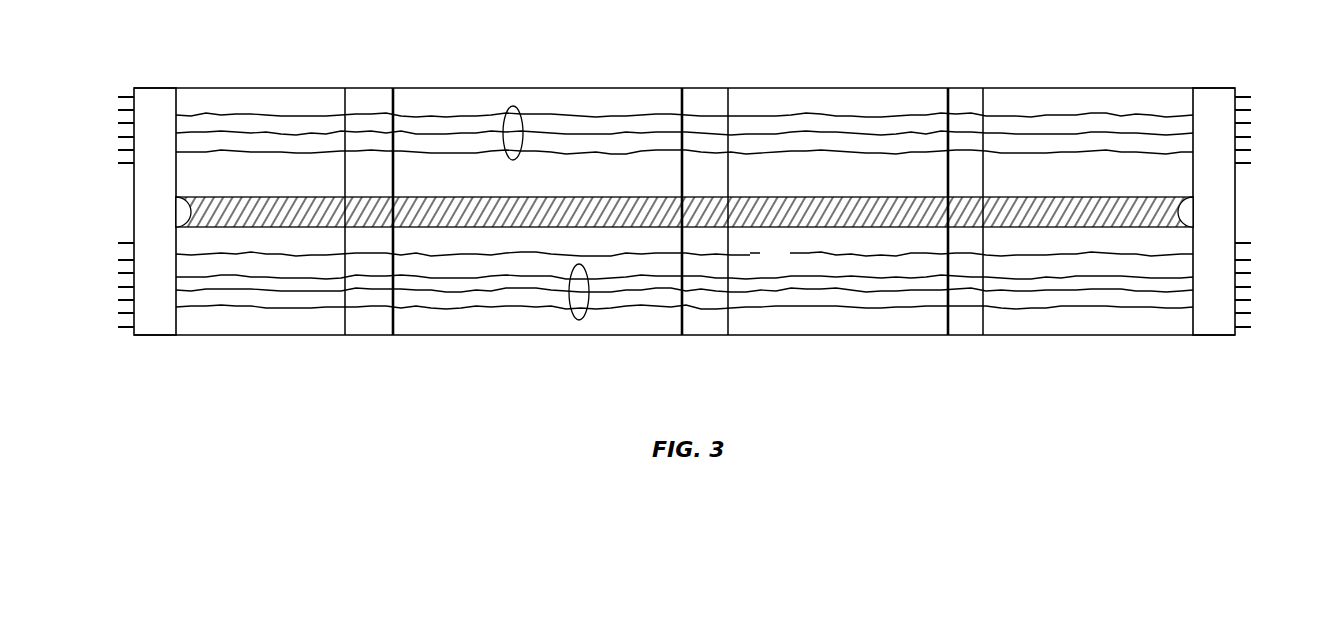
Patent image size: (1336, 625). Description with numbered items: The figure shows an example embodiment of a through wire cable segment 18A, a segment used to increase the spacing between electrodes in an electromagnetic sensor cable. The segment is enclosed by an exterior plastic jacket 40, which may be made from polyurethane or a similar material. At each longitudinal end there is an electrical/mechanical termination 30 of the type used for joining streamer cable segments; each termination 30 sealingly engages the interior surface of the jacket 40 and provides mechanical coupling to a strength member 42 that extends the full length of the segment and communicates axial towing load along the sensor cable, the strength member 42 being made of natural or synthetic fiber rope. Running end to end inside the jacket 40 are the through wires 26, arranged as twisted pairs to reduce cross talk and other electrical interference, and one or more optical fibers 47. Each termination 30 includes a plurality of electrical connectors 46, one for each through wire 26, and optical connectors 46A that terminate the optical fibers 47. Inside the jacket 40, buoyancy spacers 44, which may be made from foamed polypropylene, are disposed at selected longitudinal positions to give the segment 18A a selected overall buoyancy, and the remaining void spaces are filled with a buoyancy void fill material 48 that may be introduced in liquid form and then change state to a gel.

The through wire cable segment 18A is at (863, 34).
The electrical/mechanical termination 30 is at (155, 103).
The exterior plastic jacket 40 is at (435, 87).
The strength member 42 is at (480, 228).
The buoyancy spacer 44 is at (370, 318).
The electrical connector 46 is at (116, 97).
The optical connector 46A is at (115, 243).
The optical fiber 47 is at (232, 255).
The buoyancy void fill material 48 is at (789, 263).
The through wire 26 is at (513, 106).